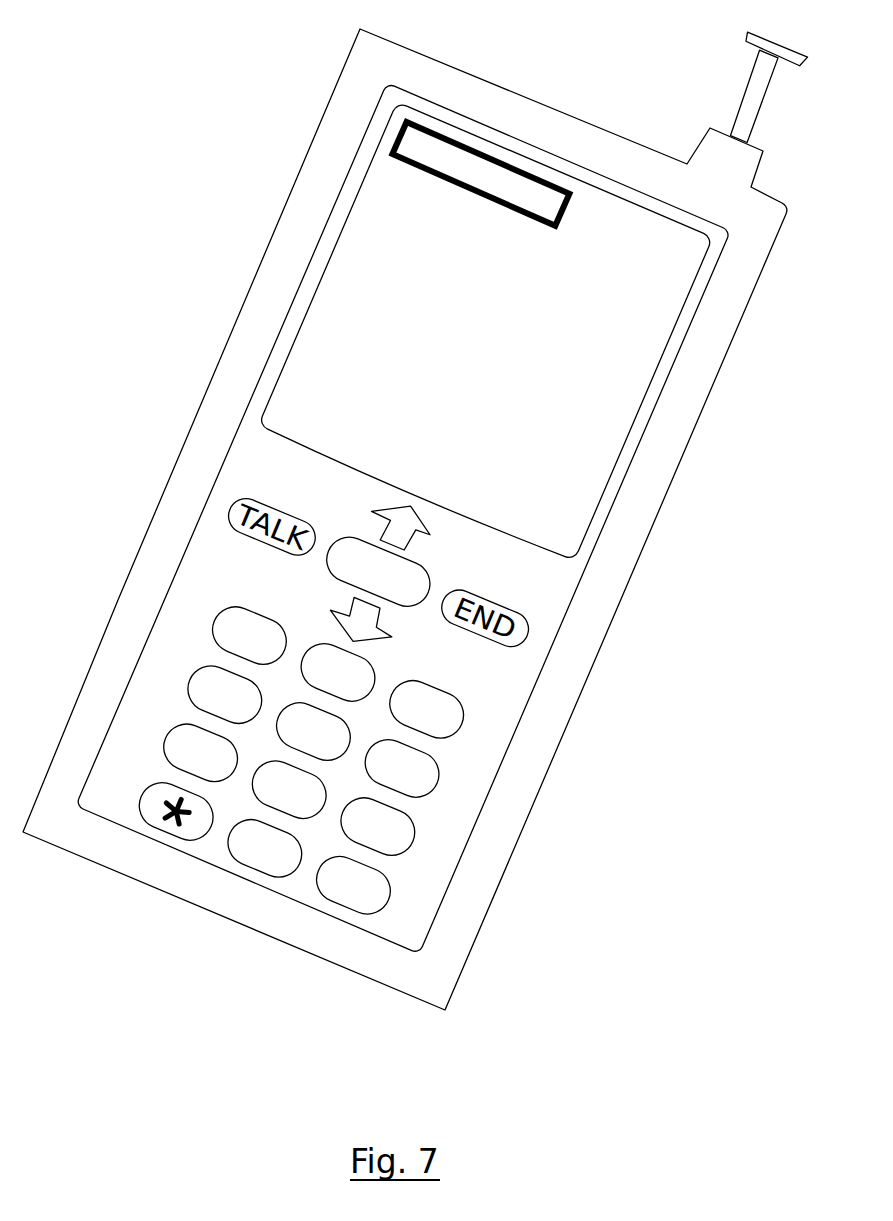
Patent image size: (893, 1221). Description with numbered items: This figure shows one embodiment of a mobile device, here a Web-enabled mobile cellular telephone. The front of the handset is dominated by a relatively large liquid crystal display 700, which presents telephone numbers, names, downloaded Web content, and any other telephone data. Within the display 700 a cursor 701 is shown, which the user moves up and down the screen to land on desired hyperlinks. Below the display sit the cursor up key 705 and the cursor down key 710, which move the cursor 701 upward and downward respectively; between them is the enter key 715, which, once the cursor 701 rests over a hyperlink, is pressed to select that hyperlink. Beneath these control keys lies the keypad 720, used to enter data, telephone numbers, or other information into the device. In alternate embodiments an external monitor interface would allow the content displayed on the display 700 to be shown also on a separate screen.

The liquid crystal display 700 is at (621, 341).
The cursor 701 is at (470, 147).
The cursor up key 705 is at (410, 523).
The cursor down key 710 is at (383, 617).
The enter key 715 is at (430, 570).
The keypad 720 is at (577, 745).